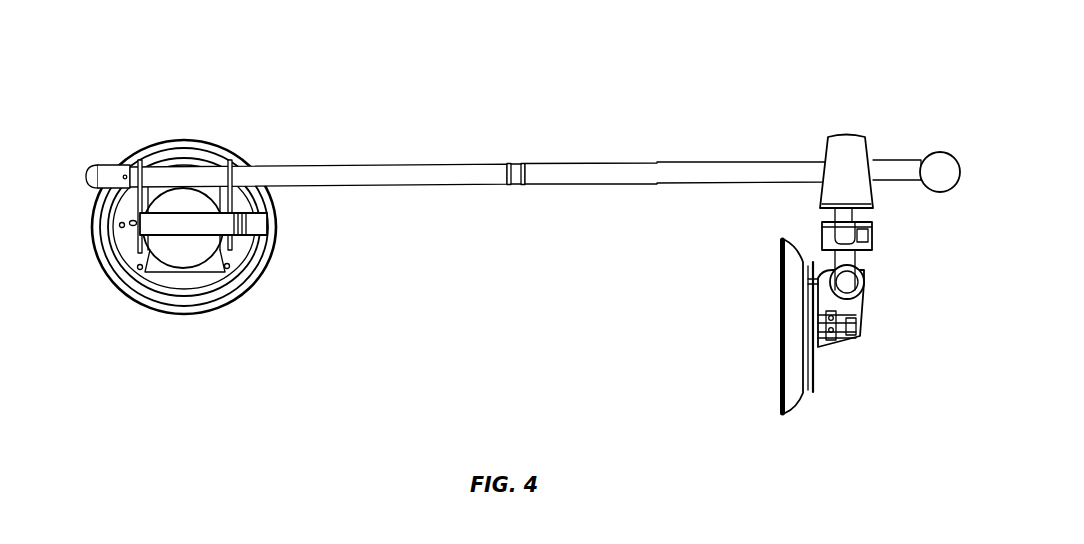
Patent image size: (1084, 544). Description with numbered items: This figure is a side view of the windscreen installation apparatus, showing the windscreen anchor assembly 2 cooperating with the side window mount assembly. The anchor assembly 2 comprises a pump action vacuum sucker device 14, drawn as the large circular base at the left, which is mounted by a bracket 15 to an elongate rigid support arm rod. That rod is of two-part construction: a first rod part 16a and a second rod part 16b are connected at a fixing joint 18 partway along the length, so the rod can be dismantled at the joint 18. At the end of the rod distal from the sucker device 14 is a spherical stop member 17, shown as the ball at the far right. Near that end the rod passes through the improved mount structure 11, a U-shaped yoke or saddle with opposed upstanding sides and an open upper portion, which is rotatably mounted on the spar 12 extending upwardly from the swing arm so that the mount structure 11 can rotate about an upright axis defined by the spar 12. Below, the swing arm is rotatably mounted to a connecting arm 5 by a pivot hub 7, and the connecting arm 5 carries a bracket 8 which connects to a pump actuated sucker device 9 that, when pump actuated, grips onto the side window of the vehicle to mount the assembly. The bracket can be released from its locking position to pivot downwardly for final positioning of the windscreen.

The windscreen anchor assembly 2 is at (501, 268).
The pump action vacuum sucker device 14 is at (243, 290).
The bracket 15 is at (108, 212).
The first part of the rod 16a is at (388, 172).
The second rod part 16b is at (617, 175).
The fixing joint 18 is at (516, 172).
The mount structure 11 is at (828, 150).
The spherical stop member 17 is at (938, 170).
The pivot hub 7 is at (854, 237).
The spar 12 is at (866, 238).
The connecting arm 5 is at (865, 272).
The bracket 8 is at (848, 302).
The pump actuated sucker device 9 is at (800, 395).